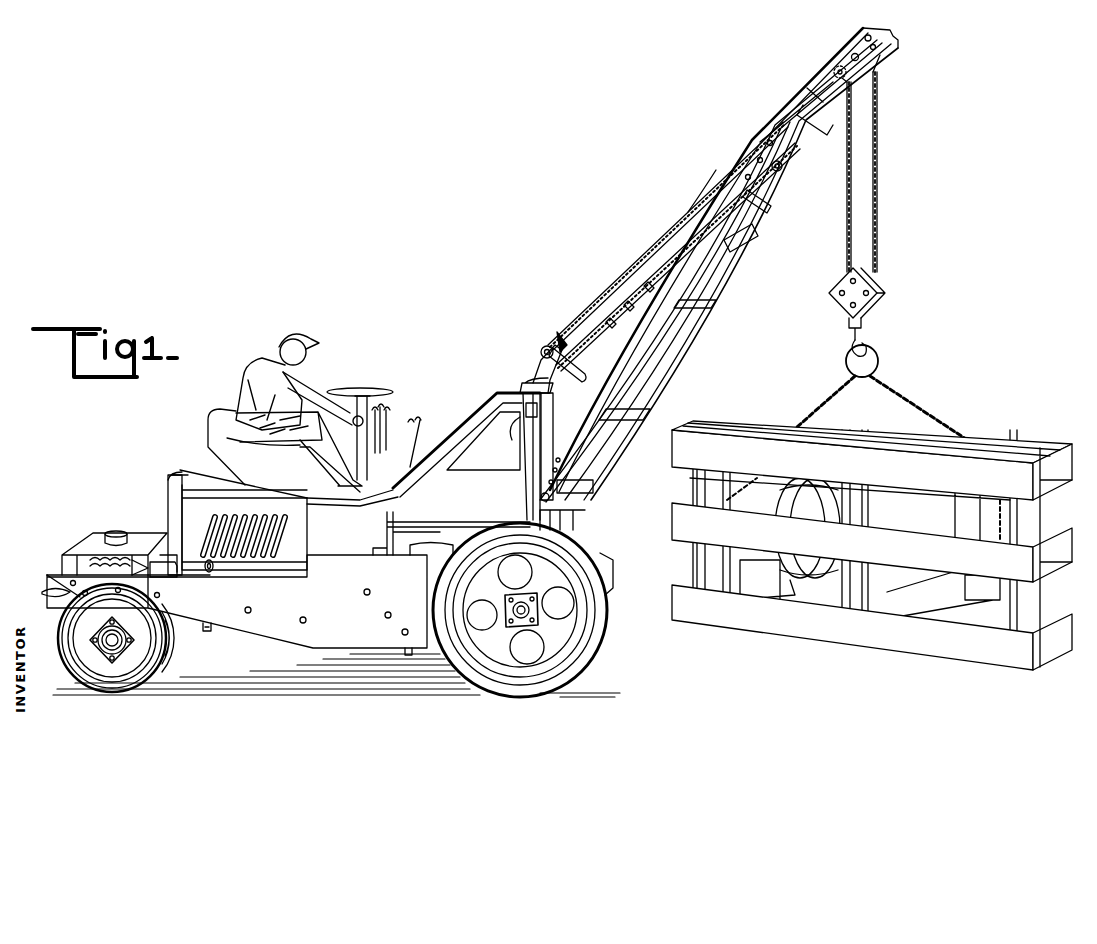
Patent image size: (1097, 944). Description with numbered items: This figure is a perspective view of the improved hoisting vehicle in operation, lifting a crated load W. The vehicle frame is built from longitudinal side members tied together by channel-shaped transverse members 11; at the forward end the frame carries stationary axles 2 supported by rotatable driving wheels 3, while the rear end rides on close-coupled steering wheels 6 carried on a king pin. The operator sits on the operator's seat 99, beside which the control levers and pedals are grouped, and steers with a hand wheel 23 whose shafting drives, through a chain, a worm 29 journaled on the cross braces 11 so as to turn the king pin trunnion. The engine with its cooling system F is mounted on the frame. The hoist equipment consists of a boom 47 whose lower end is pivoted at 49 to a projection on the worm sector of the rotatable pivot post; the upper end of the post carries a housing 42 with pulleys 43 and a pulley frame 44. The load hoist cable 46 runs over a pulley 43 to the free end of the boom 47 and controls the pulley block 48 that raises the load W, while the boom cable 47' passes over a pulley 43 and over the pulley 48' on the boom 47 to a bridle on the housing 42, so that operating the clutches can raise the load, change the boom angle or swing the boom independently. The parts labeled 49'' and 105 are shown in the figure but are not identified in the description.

The stationary axles 2 is at (532, 622).
The driving wheels 3 is at (587, 651).
The steering wheels 6 is at (115, 673).
The transverse members 11 is at (73, 563).
The hand wheel 23 is at (386, 393).
The worm 29 is at (108, 565).
The housing 42 is at (524, 380).
The pulleys 43 is at (526, 353).
The pulley frame 44 is at (552, 340).
The load hoist cable 46 is at (688, 212).
The boom 47 is at (719, 265).
The boom cable 47' is at (679, 246).
The pulley block 48 is at (886, 356).
The pulley 48' is at (798, 167).
The boom pivot 49 is at (541, 511).
The link arm 49'' is at (570, 376).
The operator's seat 99 is at (270, 453).
The boom lift cylinder 105 is at (547, 462).
The cooling system F is at (172, 517).
The load W is at (1024, 446).